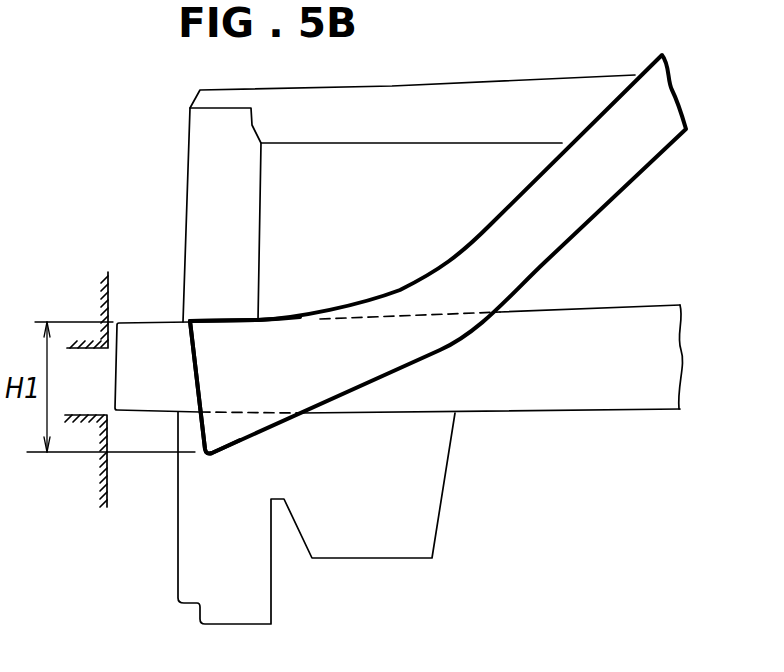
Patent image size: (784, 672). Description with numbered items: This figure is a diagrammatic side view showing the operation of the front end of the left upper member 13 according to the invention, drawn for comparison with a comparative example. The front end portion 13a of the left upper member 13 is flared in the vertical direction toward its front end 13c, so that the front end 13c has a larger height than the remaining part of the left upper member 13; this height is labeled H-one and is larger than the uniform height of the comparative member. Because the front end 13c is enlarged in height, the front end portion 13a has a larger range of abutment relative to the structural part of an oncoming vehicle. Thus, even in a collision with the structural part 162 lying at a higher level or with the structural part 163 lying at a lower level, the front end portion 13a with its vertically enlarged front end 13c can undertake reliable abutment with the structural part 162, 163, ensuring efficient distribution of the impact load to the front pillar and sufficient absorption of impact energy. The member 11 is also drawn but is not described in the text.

The fixed body 11 is at (534, 404).
The left upper member 13 is at (475, 238).
The front end portion 13a is at (214, 333).
The front end 13c is at (200, 433).
The structural part 162 is at (110, 293).
The structural part 163 is at (107, 477).